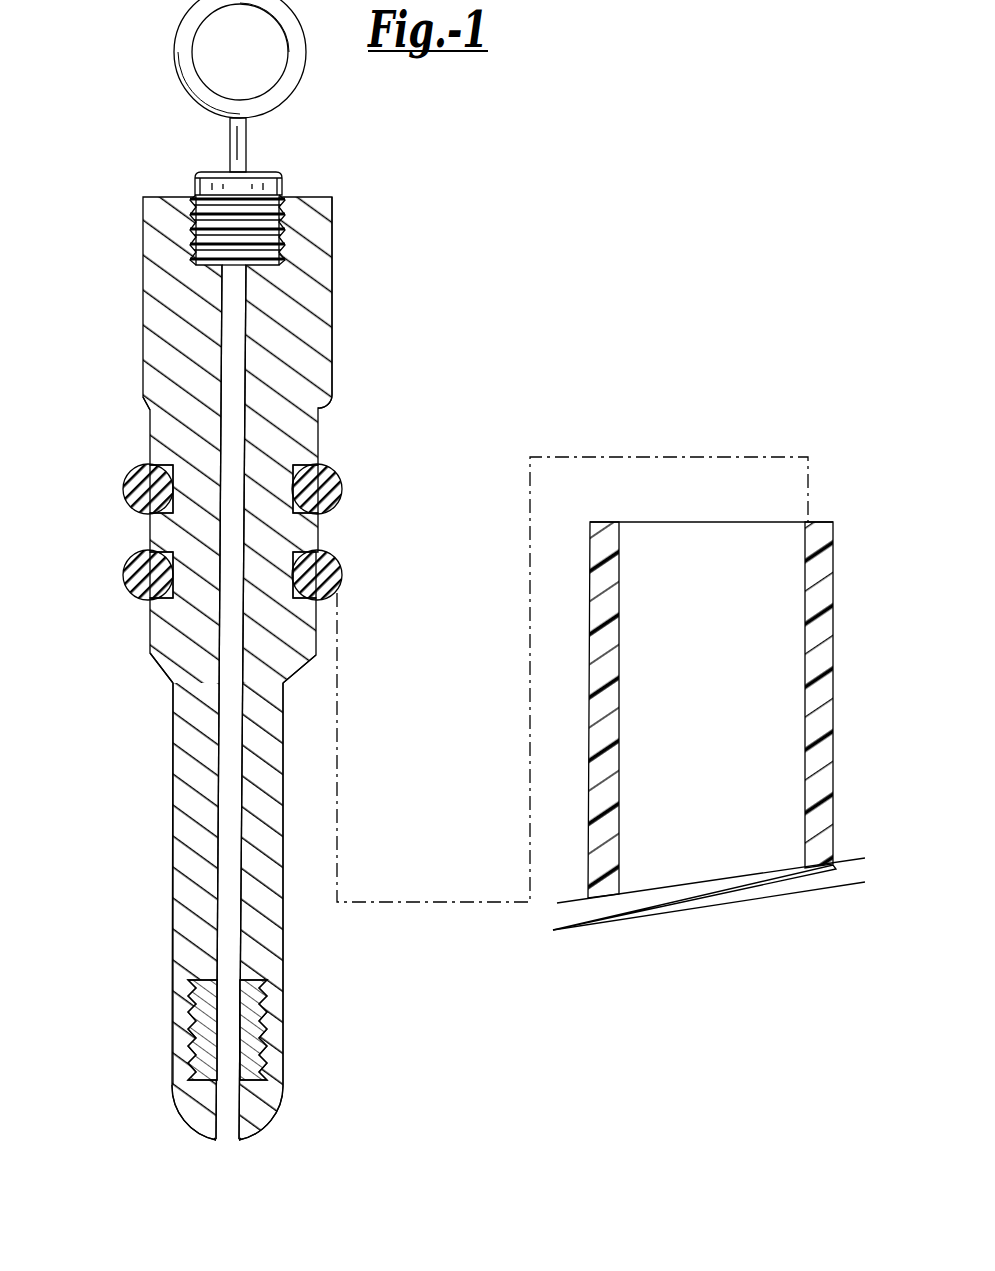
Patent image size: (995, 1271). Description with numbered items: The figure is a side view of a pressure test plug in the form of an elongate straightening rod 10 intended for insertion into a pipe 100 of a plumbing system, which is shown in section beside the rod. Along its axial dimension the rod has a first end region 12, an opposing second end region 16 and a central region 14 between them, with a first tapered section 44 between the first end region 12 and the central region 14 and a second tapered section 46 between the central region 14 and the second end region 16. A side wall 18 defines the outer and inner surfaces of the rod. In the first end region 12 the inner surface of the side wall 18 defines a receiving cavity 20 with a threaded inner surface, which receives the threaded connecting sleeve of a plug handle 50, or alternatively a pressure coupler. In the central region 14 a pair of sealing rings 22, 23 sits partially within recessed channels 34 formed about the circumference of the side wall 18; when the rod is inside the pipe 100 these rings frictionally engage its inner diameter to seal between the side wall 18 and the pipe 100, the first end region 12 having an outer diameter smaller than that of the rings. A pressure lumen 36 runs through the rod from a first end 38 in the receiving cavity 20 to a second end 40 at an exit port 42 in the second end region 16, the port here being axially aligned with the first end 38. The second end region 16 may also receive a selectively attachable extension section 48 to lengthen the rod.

The elongate straightening rod 10 is at (429, 264).
The first end region 12 is at (120, 250).
The central region 14 is at (128, 522).
The second end region 16 is at (151, 878).
The side wall 18 is at (332, 292).
The receiving cavity 20 is at (270, 232).
The sealing ring 22 is at (345, 572).
The sealing ring 23 is at (338, 480).
The recessed channel 34 is at (313, 463).
The pressure lumen 36 is at (235, 393).
The first end of the lumen 38 is at (250, 285).
The second end of the lumen 40 is at (280, 1046).
The exit port 42 is at (223, 1142).
The first tapered section 44 is at (143, 410).
The second tapered section 46 is at (300, 668).
The extension section 48 is at (282, 1100).
The plug handle 50 is at (303, 72).
The pipe 100 is at (844, 500).